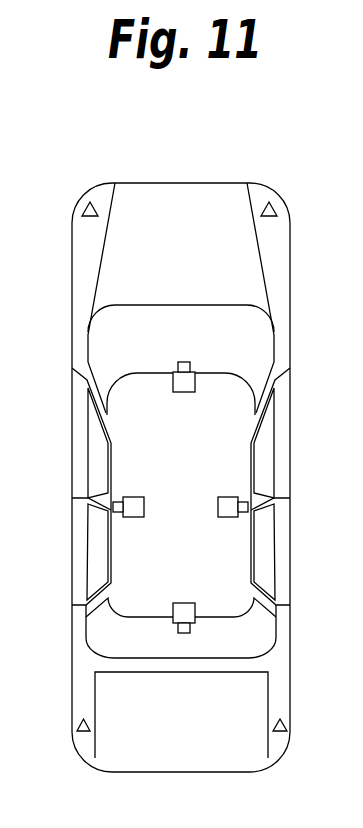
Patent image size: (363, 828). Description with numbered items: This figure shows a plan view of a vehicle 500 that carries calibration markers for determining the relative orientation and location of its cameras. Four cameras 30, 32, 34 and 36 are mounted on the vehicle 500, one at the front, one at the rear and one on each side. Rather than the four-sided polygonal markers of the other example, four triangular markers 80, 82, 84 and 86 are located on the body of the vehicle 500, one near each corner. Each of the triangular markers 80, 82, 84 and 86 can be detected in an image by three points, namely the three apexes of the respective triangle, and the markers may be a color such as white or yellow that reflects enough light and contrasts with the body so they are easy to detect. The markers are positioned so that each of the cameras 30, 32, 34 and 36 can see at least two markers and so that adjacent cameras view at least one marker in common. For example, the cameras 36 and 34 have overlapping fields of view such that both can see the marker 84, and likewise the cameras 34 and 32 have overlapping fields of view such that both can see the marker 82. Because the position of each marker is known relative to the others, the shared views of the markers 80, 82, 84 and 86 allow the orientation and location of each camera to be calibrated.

The vehicle 500 is at (181, 477).
The triangular marker 80 is at (82, 207).
The triangular marker 82 is at (278, 207).
The triangular marker 84 is at (281, 733).
The triangular marker 86 is at (83, 733).
The camera 30 is at (130, 494).
The camera 32 is at (185, 393).
The camera 34 is at (233, 494).
The camera 36 is at (185, 607).